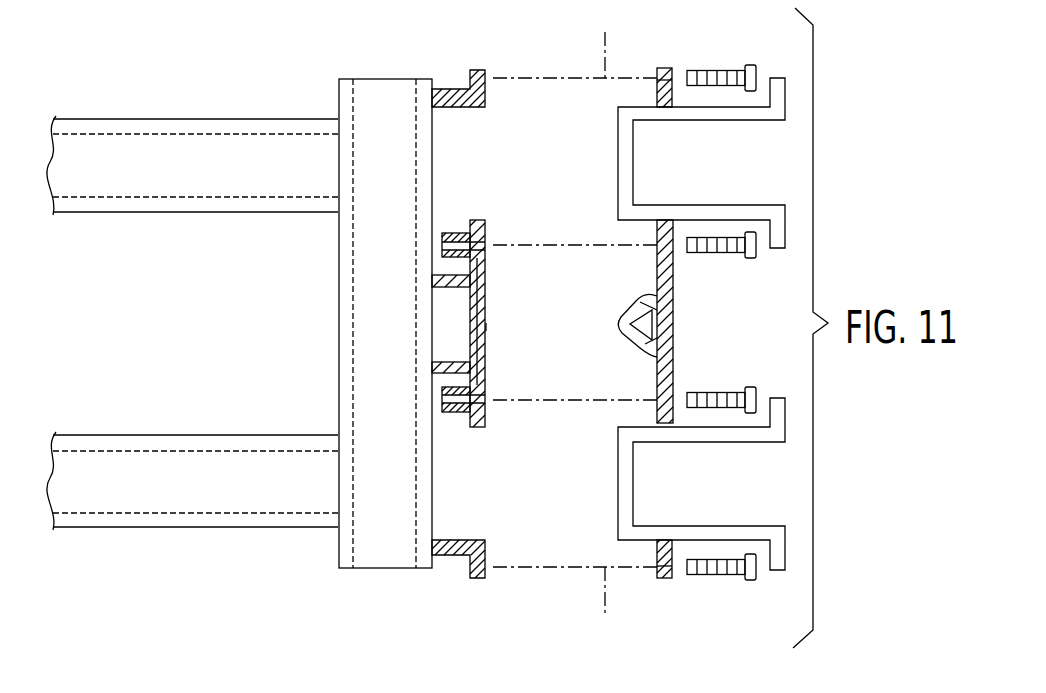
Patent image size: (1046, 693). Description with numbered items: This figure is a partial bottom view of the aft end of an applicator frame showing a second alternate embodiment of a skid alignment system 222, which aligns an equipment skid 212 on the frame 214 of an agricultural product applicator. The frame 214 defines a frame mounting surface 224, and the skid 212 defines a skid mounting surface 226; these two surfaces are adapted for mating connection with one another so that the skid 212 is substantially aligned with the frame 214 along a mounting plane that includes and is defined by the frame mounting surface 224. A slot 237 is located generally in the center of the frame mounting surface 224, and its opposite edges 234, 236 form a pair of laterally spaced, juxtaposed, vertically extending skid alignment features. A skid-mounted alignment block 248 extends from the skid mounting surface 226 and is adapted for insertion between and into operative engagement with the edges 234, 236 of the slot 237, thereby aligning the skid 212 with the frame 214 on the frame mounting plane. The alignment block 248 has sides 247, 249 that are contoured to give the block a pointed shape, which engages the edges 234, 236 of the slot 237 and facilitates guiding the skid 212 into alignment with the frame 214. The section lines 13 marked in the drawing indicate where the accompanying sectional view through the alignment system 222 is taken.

The section lines 13- 13 is at (630, 615).
The equipment skid 212 is at (720, 122).
The frame 214 is at (198, 119).
The skid alignment system 222 is at (790, 615).
The frame mounting surface 224 is at (488, 226).
The skid mounting surface 226 is at (657, 232).
The edge of slot 234 is at (482, 300).
The edge of slot 236 is at (482, 338).
The slot 237 is at (497, 328).
The side of alignment block 247 is at (660, 296).
The skid-mounted alignment block 248 is at (617, 323).
The side of alignment block 249 is at (660, 348).